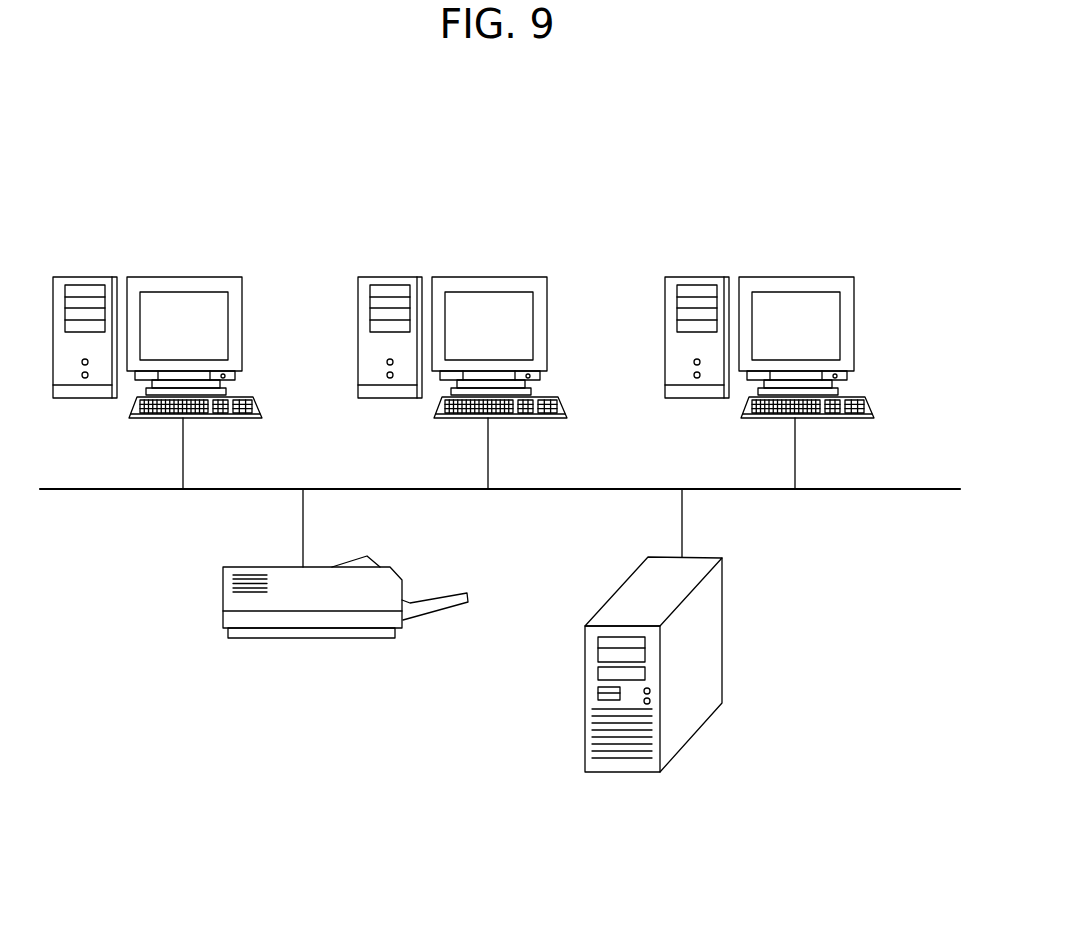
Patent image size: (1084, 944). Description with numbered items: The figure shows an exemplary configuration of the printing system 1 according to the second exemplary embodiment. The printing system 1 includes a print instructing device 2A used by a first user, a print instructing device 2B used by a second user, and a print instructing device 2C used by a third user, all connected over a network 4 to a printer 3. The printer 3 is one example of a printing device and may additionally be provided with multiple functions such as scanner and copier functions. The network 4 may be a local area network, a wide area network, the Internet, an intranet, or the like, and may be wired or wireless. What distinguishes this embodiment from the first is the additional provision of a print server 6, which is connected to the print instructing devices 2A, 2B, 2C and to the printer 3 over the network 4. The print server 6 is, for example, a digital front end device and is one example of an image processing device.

The printing system 1 is at (605, 162).
The print instructing device 2A is at (183, 277).
The print instructing device 2B is at (488, 277).
The print instructing device 2C is at (795, 277).
The printer 3 is at (320, 638).
The network 4 is at (850, 489).
The print server 6 is at (722, 630).